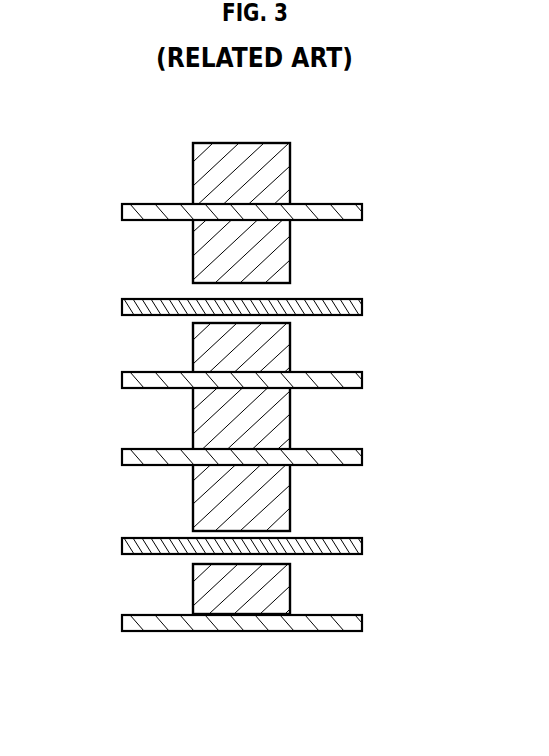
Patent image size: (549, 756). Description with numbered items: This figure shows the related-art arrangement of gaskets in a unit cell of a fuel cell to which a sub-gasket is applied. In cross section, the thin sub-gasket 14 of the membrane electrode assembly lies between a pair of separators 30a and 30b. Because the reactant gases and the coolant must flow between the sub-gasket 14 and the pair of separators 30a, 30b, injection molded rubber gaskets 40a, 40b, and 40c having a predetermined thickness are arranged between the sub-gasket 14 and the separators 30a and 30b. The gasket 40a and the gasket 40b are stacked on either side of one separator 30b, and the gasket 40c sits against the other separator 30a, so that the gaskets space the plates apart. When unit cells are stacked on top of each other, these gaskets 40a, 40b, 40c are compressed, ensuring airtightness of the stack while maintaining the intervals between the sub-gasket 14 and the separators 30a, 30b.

The sub-gasket 14 is at (357, 307).
The separator 30a is at (357, 380).
The separator 30b is at (357, 212).
The injection molded rubber gasket 40a is at (207, 254).
The injection molded rubber gasket 40b is at (207, 168).
The injection molded rubber gasket 40c is at (207, 348).